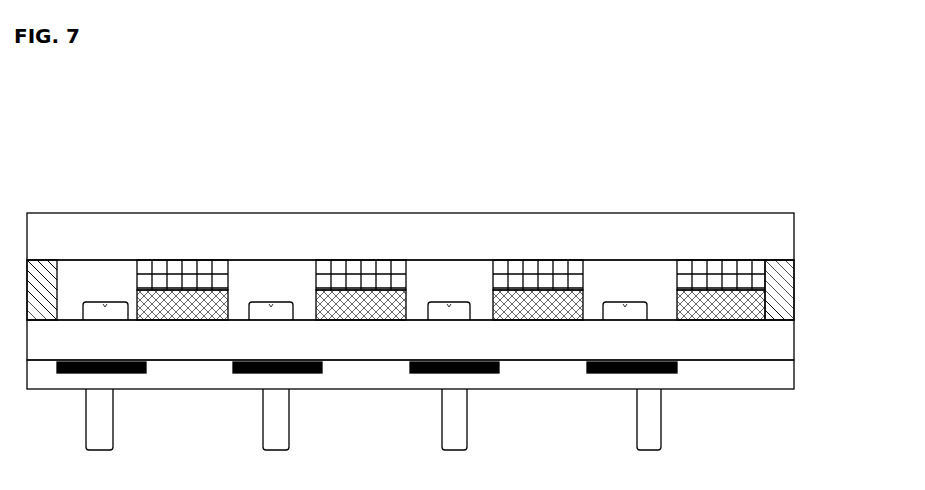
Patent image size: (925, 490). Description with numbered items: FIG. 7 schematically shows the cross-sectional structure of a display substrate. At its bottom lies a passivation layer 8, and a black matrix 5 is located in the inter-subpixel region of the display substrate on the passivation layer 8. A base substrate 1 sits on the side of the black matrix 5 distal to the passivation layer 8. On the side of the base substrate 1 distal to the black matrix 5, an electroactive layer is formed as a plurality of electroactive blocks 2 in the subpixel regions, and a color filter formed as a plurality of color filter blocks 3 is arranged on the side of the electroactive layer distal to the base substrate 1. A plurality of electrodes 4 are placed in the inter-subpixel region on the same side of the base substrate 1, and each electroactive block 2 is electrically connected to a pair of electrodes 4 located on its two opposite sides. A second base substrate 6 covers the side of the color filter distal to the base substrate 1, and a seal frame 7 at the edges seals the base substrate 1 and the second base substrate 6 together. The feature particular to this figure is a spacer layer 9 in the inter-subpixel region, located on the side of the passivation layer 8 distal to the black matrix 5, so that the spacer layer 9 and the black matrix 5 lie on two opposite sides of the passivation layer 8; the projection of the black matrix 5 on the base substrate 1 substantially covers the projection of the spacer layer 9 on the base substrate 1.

The base substrate 1 is at (794, 340).
The electroactive blocks 2 is at (720, 290).
The color filter blocks 3 is at (720, 290).
The electrodes 4 is at (624, 302).
The black matrix 5 is at (631, 373).
The second base substrate 6 is at (794, 236).
The seal frame 7 is at (794, 289).
The passivation layer 8 is at (794, 375).
The spacer layer 9 is at (661, 437).